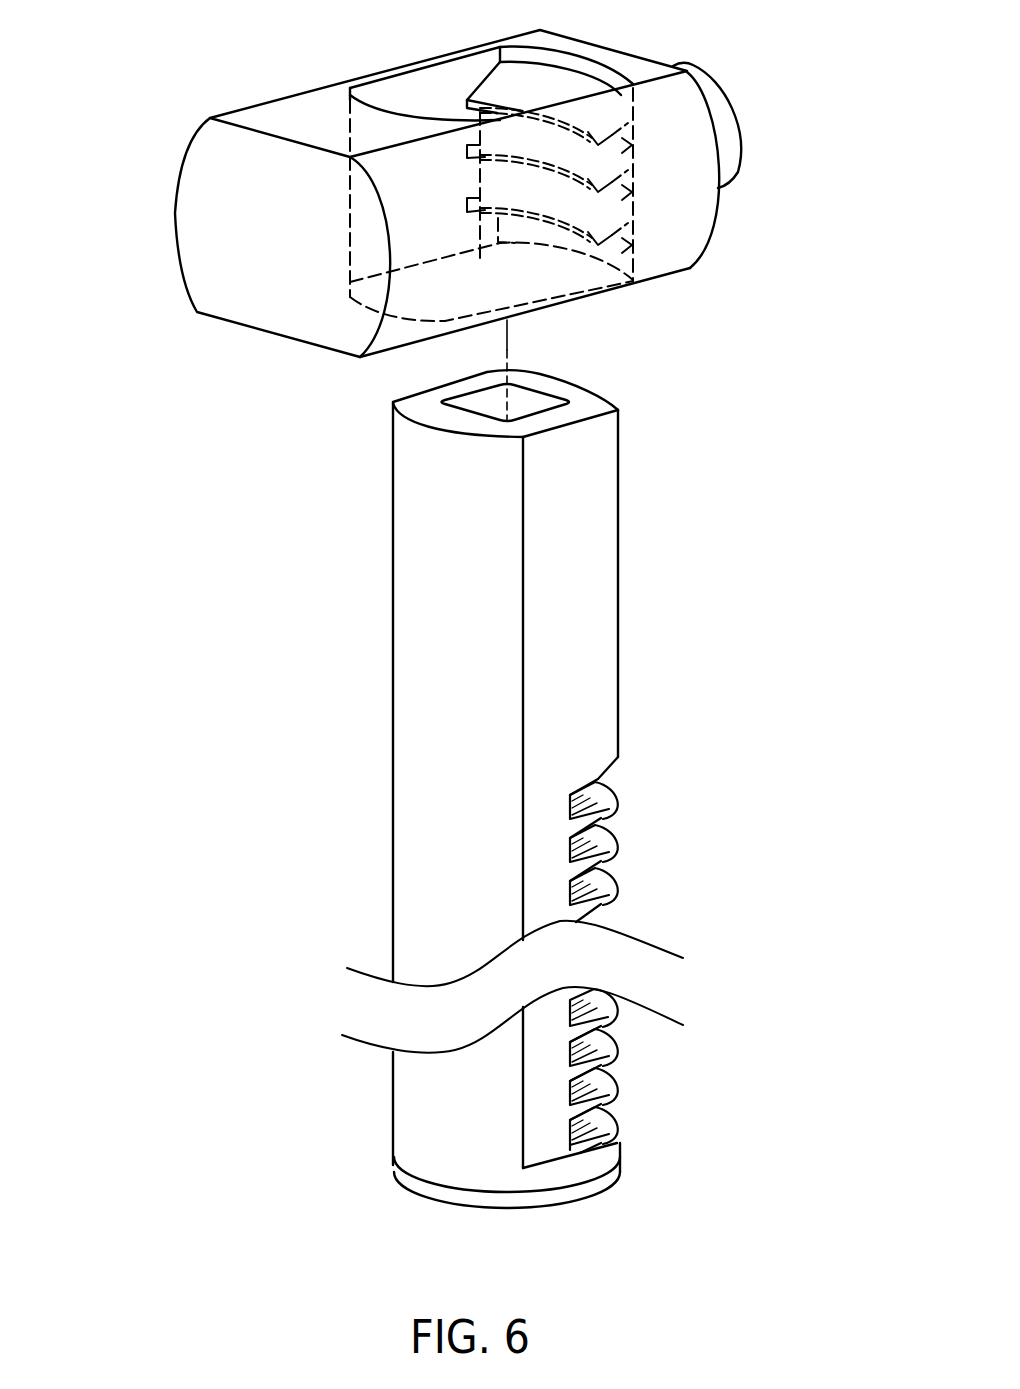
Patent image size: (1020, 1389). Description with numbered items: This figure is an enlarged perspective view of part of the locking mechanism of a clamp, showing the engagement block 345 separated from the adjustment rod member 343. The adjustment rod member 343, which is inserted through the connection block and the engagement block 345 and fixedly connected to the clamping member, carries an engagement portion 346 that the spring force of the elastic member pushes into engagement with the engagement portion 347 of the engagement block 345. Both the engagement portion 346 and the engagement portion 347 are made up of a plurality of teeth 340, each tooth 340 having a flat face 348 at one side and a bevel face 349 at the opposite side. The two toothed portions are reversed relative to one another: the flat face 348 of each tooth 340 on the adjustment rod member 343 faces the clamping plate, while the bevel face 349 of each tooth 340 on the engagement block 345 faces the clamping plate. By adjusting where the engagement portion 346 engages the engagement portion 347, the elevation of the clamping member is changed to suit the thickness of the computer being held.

The teeth 340 is at (493, 832).
The adjustment rod member 343 is at (392, 692).
The engagement block 345 is at (174, 188).
The engagement portion 346 is at (615, 889).
The engagement portion 347 is at (483, 72).
The flat face 348 is at (608, 200).
The bevel face 349 is at (546, 145).